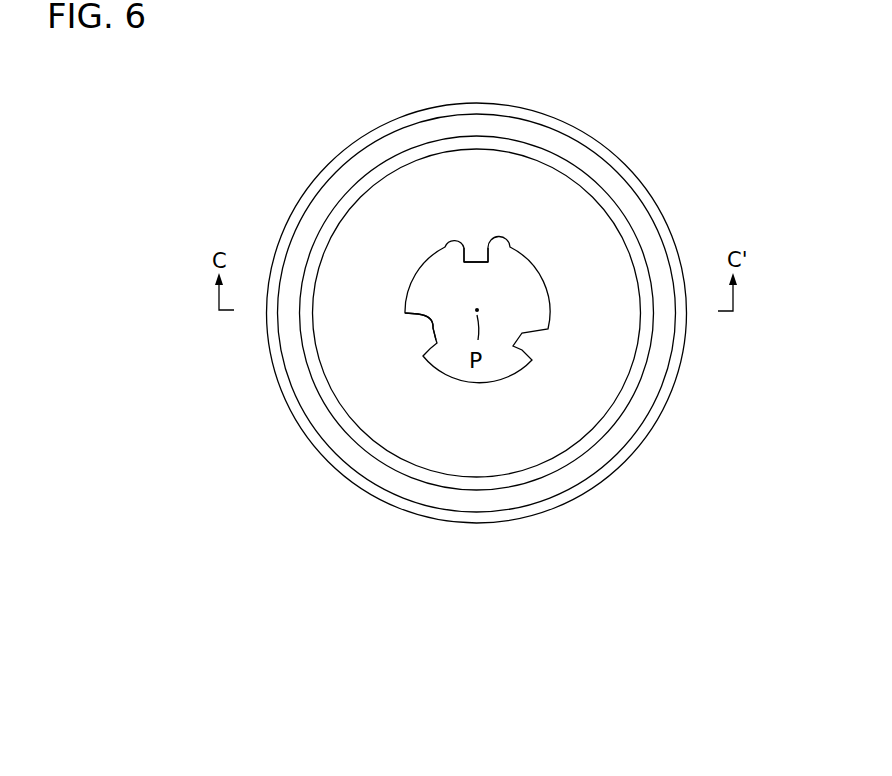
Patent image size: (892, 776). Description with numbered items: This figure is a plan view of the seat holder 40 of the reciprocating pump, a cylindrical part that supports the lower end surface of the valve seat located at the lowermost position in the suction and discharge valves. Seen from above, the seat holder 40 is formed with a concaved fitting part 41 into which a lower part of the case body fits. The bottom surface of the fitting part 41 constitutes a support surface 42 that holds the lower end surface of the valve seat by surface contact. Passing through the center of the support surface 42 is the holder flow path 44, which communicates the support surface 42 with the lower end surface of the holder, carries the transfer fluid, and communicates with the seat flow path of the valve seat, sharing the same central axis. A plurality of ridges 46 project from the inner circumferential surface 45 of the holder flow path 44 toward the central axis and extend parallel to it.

The seat holder 40 is at (660, 148).
The fitting part 41 is at (601, 313).
The support surface 42 is at (568, 226).
The holder flow path 44 is at (518, 314).
The inner circumferential surface 45 is at (413, 275).
The ridges 46 is at (405, 315).